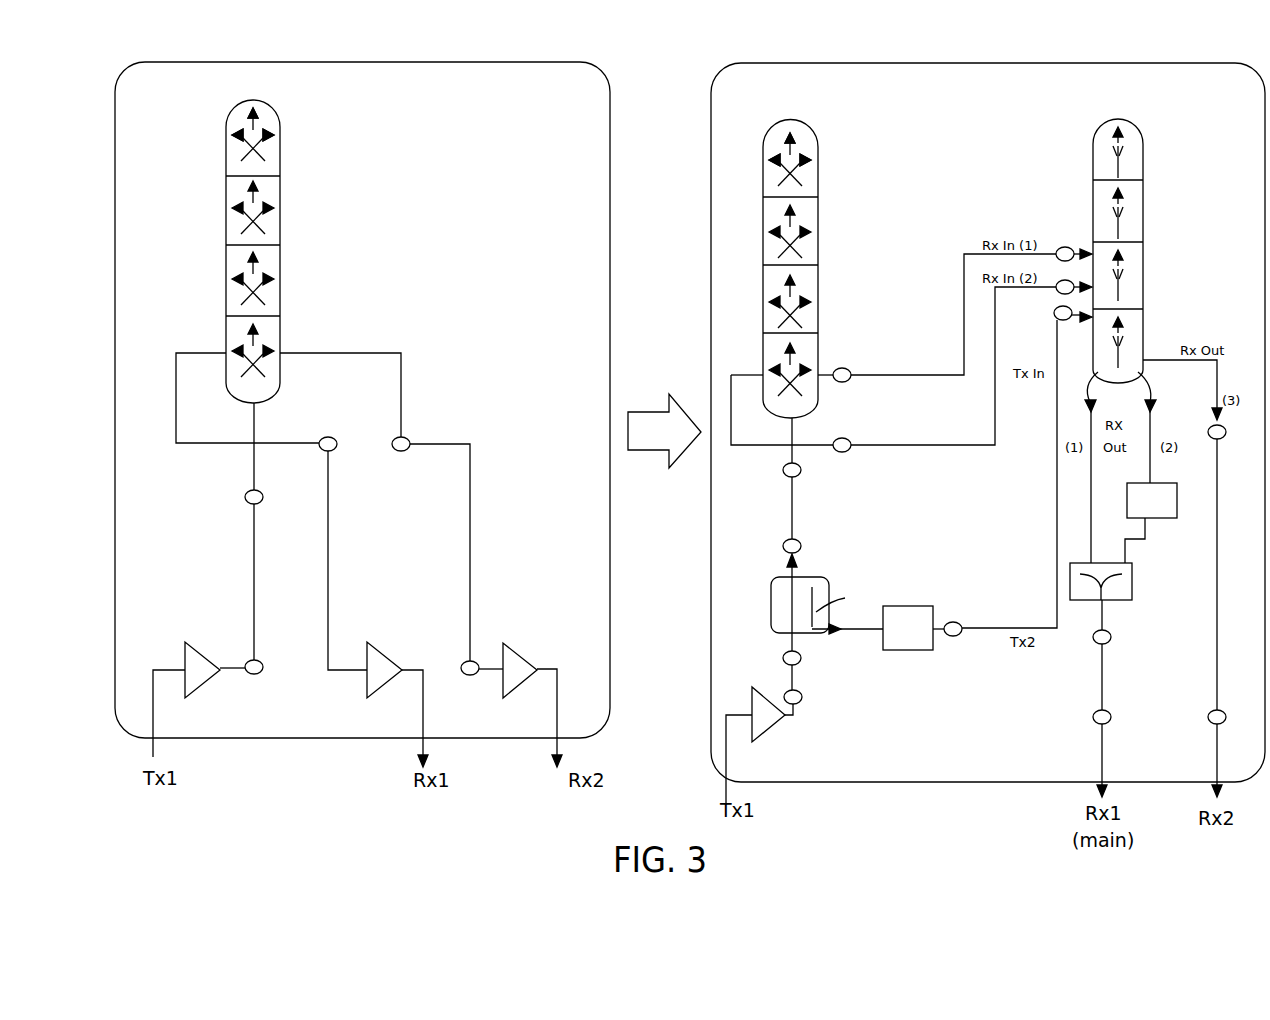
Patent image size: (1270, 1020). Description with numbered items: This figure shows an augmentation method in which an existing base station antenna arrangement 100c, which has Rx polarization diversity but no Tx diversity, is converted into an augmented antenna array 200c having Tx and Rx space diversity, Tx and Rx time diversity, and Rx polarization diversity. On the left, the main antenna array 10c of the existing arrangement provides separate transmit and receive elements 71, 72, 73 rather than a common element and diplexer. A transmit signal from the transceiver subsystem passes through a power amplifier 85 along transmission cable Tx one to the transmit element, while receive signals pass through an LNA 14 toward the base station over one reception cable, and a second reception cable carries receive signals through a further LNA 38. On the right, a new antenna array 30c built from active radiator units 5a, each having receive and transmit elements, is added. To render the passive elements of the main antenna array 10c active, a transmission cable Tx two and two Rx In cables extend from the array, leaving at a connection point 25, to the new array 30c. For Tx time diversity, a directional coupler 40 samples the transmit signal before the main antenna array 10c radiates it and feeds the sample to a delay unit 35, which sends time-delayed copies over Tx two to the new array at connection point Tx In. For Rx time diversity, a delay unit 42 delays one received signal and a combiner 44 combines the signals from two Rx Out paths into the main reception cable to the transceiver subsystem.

The existing base station antenna arrangement 100c is at (371, 62).
The augmented antenna array 200c is at (884, 63).
The main antenna array 10c is at (287, 221).
The transmit and receive element 71 is at (244, 140).
The transmit and receive element 72 is at (262, 118).
The transmit and receive element 73 is at (279, 145).
The power amplifier 85 is at (203, 686).
The LNA 14 is at (367, 692).
The low noise amplifier (LNA) 38 is at (493, 686).
The connector 25 is at (852, 374).
The directional coupler 40 is at (770, 607).
The delay unit 35 is at (908, 650).
The new antenna array 30c is at (1147, 167).
The active radiator unit 5a is at (1130, 223).
The delay unit 42 is at (1171, 507).
The combiner 44 is at (1122, 600).